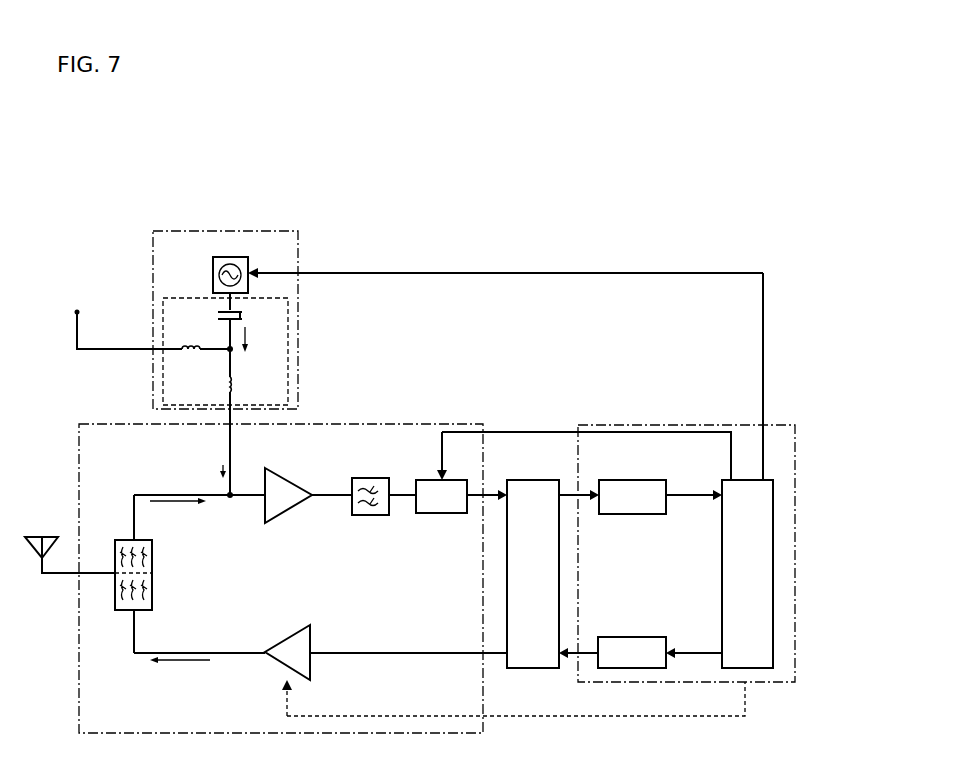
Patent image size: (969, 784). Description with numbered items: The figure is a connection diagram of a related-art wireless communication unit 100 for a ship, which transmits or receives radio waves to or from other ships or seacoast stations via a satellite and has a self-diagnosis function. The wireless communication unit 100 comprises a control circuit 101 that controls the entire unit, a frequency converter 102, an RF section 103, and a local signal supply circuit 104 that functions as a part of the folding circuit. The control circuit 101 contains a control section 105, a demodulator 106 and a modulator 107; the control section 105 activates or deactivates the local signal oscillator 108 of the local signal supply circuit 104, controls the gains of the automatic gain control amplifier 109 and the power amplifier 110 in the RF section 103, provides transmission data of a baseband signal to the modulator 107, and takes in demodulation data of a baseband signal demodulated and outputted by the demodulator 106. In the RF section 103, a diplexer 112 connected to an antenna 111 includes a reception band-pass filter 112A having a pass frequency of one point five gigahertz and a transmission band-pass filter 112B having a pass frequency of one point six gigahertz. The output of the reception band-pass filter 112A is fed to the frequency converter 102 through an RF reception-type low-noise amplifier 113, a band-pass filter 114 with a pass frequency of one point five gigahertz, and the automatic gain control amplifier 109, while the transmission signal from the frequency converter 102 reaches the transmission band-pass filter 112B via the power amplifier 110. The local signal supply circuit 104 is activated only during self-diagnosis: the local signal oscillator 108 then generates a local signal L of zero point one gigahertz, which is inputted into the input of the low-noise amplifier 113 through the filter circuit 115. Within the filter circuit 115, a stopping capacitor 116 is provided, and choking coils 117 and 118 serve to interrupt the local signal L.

The wireless communication unit 100 is at (460, 219).
The control circuit 101 is at (605, 422).
The frequency converter 102 is at (540, 480).
The RF section 103 is at (358, 418).
The local signal supply circuit 104 is at (300, 327).
The control section 105 is at (773, 503).
The demodulator 106 is at (650, 480).
The modulator 107 is at (648, 637).
The local signal oscillator 108 is at (233, 257).
The automatic gain control amplifier 109 is at (455, 515).
The power amplifier 110 is at (286, 640).
The antenna 111 is at (35, 537).
The diplexer 112 is at (127, 540).
The reception band-pass filter 112A is at (152, 556).
The transmission band-pass filter 112B is at (152, 594).
The low-noise amplifier 113 is at (297, 482).
The band-pass filter 114 is at (370, 478).
The filter circuit 115 is at (178, 298).
The stopping capacitor 116 is at (240, 315).
The choking coil 117 is at (203, 339).
The choking coil 118 is at (227, 383).